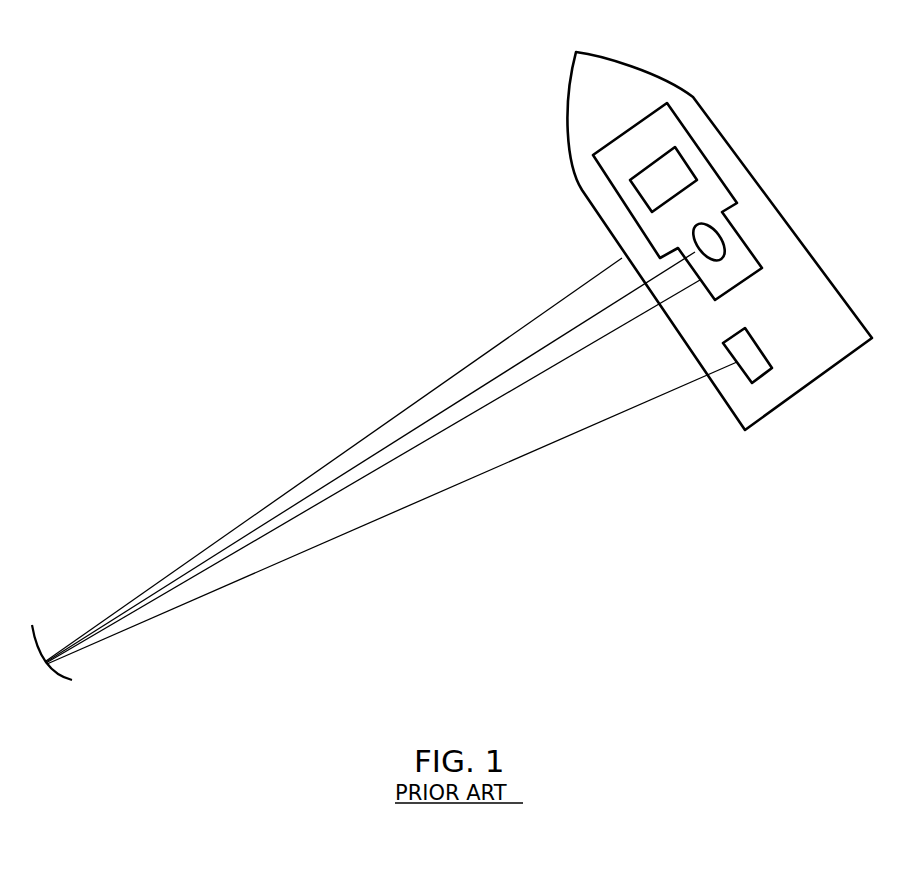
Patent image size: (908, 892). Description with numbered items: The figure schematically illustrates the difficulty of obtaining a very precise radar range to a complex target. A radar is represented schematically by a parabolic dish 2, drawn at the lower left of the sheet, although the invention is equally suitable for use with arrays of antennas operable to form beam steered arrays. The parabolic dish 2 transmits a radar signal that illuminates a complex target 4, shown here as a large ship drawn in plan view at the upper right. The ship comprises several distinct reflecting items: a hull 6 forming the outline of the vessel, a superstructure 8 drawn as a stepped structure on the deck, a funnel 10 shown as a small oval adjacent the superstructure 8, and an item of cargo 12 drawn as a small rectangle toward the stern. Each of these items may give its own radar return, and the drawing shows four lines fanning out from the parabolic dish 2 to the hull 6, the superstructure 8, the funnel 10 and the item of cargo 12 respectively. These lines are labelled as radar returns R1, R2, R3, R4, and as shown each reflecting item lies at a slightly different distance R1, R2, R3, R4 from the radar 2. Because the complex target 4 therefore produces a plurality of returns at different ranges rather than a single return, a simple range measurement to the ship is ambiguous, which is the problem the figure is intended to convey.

The parabolic dish 2 is at (58, 677).
The complex target 4 is at (728, 240).
The hull 6 is at (593, 218).
The superstructure 8 is at (719, 181).
The funnel 10 is at (723, 242).
The item of cargo 12 is at (763, 350).
The radar return R1 is at (334, 459).
The radar return R2 is at (370, 457).
The radar return R3 is at (373, 471).
The radar return R4 is at (392, 513).